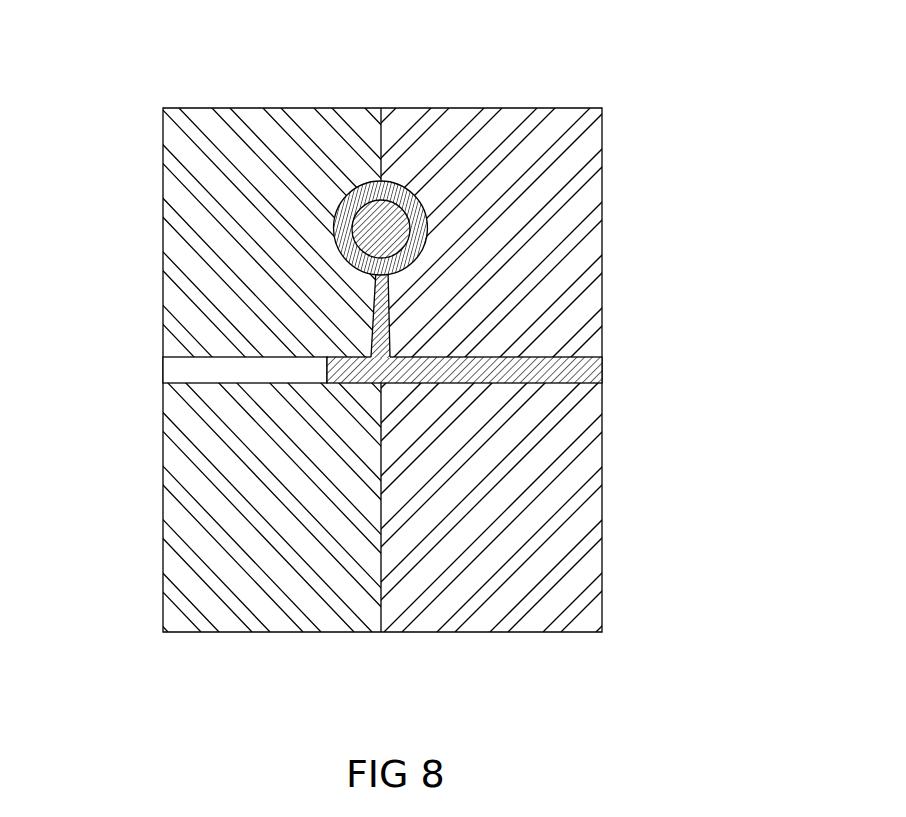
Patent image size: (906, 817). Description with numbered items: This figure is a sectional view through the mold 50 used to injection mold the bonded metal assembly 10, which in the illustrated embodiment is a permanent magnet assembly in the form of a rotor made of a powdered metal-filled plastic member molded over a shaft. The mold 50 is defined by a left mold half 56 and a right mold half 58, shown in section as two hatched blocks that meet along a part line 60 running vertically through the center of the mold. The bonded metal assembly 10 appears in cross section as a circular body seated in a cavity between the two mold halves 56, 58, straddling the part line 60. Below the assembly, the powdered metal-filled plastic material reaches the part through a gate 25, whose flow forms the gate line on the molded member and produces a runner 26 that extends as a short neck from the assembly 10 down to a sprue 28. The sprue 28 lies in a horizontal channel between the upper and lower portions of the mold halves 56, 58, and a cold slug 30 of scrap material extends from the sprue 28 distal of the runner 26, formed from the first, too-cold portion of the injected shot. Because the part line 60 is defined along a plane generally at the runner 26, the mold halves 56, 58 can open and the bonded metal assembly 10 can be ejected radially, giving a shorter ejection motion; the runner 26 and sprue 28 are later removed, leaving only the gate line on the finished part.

The bonded metal assembly 10 is at (552, 229).
The gate 25 is at (392, 277).
The runner 26 is at (390, 323).
The sprue 28 is at (572, 358).
The cold slug 30 is at (333, 385).
The mold 50 is at (453, 327).
The left mold half 56 is at (240, 108).
The right mold half 58 is at (457, 108).
The part line 60 is at (381, 150).